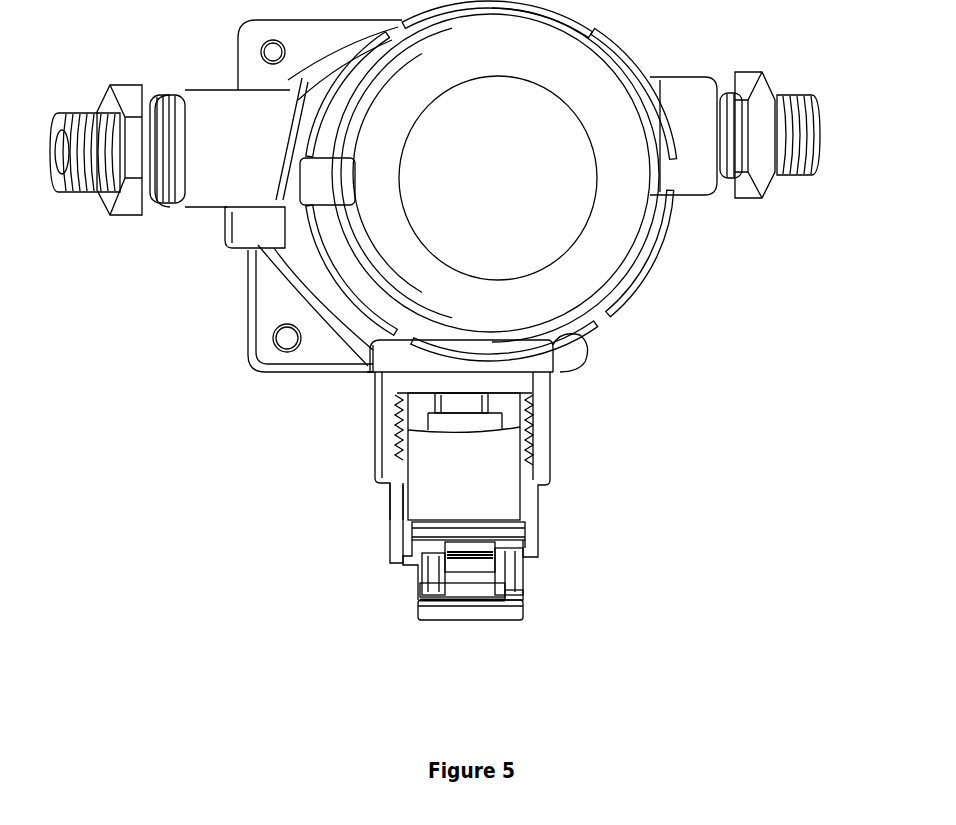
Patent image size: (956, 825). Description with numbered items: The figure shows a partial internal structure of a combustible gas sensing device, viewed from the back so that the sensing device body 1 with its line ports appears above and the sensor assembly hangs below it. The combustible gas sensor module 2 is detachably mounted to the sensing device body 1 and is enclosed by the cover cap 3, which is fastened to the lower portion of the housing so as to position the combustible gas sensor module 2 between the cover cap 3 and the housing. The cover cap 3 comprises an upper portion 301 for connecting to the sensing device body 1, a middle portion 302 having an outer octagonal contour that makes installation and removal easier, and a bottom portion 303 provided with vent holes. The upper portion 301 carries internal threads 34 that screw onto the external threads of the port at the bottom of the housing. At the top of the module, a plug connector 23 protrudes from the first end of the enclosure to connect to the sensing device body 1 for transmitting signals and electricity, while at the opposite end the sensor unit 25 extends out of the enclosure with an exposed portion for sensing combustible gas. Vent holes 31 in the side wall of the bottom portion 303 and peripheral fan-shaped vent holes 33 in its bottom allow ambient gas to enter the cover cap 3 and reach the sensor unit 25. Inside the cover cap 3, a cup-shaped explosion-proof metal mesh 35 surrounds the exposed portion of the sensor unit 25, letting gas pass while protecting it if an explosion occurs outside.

The sensing device body 1 is at (318, 290).
The combustible gas sensor module 2 is at (504, 466).
The cover cap 3 is at (407, 515).
The plug connector 23 is at (465, 398).
The sensor unit 25 is at (507, 557).
The vent holes 31 is at (413, 590).
The peripheral fan-shaped vent holes 33 is at (488, 592).
The internal threads 34 is at (395, 418).
The explosion-proof metal mesh 35 is at (500, 605).
The upper portion 301 is at (375, 398).
The middle portion 302 is at (400, 493).
The bottom portion 303 is at (416, 612).